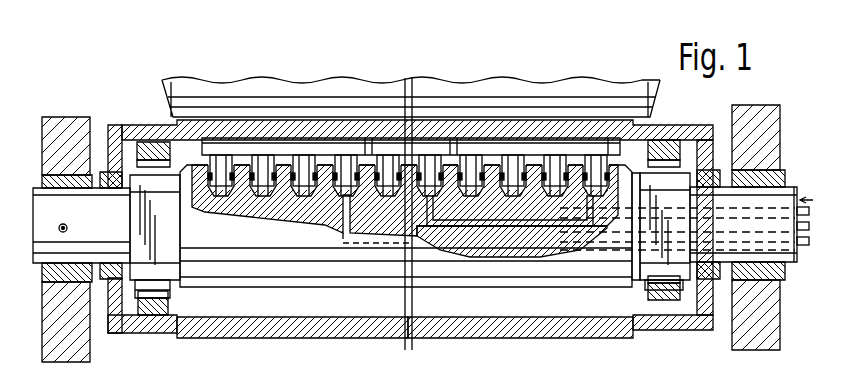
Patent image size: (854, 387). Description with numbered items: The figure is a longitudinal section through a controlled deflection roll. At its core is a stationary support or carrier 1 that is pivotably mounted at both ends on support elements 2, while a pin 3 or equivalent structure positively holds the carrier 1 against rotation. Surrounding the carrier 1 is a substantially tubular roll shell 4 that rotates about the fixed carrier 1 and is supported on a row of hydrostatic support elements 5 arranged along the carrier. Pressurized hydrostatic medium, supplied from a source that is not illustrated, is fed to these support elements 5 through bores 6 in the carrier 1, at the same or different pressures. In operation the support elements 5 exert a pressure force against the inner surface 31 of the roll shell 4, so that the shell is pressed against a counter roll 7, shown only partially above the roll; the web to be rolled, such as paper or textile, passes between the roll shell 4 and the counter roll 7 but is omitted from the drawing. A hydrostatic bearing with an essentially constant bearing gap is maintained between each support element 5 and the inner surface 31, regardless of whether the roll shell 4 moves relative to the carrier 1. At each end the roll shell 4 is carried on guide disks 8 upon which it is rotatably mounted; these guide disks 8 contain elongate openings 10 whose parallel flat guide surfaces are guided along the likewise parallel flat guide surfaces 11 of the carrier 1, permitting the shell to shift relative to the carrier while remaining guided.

The support 1 is at (260, 270).
The support elements 2 is at (63, 128).
The pin 3 is at (66, 227).
The roll shell 4 is at (315, 336).
The hydrostatic support elements 5 is at (273, 140).
The bores 6 is at (543, 240).
The counter roll 7 is at (577, 93).
The guide disks 8 is at (157, 142).
The elongate openings 10 is at (157, 293).
The guide surfaces 11 is at (167, 224).
The inner surface 31 is at (448, 313).